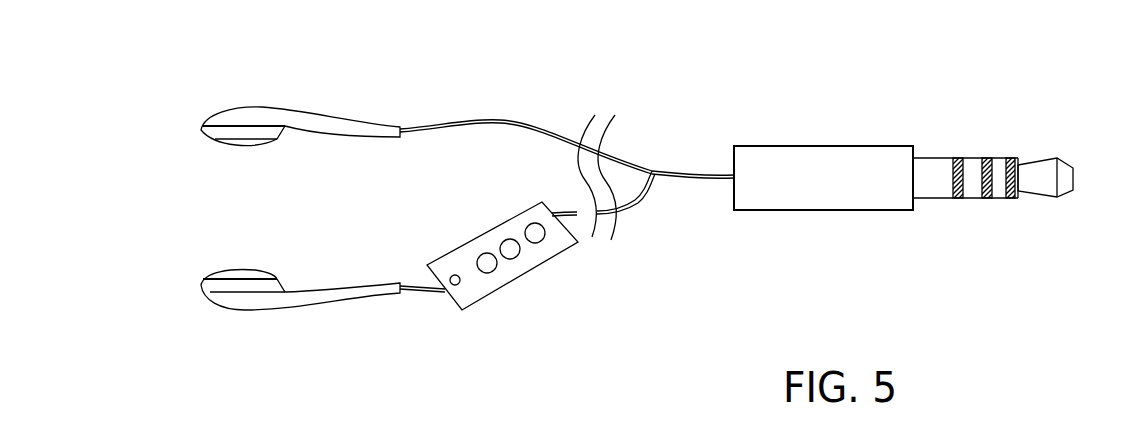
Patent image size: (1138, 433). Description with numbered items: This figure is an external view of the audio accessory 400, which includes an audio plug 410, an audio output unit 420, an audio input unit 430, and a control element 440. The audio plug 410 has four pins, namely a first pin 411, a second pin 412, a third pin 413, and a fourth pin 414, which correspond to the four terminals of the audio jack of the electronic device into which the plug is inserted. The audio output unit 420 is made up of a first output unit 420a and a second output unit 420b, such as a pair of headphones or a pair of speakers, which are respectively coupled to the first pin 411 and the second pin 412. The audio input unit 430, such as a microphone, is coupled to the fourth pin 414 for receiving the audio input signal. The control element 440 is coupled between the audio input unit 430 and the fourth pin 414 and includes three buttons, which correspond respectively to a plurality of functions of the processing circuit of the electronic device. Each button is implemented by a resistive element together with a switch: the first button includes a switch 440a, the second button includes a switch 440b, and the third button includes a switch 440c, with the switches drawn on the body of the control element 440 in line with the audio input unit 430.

The audio accessory 400 is at (338, 76).
The audio plug 410 is at (823, 146).
The first pin 411 is at (1047, 189).
The second pin 412 is at (1000, 166).
The third pin 413 is at (975, 168).
The fourth pin 414 is at (931, 170).
The audio output unit 420 is at (309, 155).
The first output unit 420a is at (327, 126).
The second output unit 420b is at (327, 290).
The audio input unit 430 is at (455, 287).
The control element 440 is at (483, 235).
The switch 440a is at (537, 243).
The switch 440b is at (510, 260).
The switch 440c is at (487, 274).